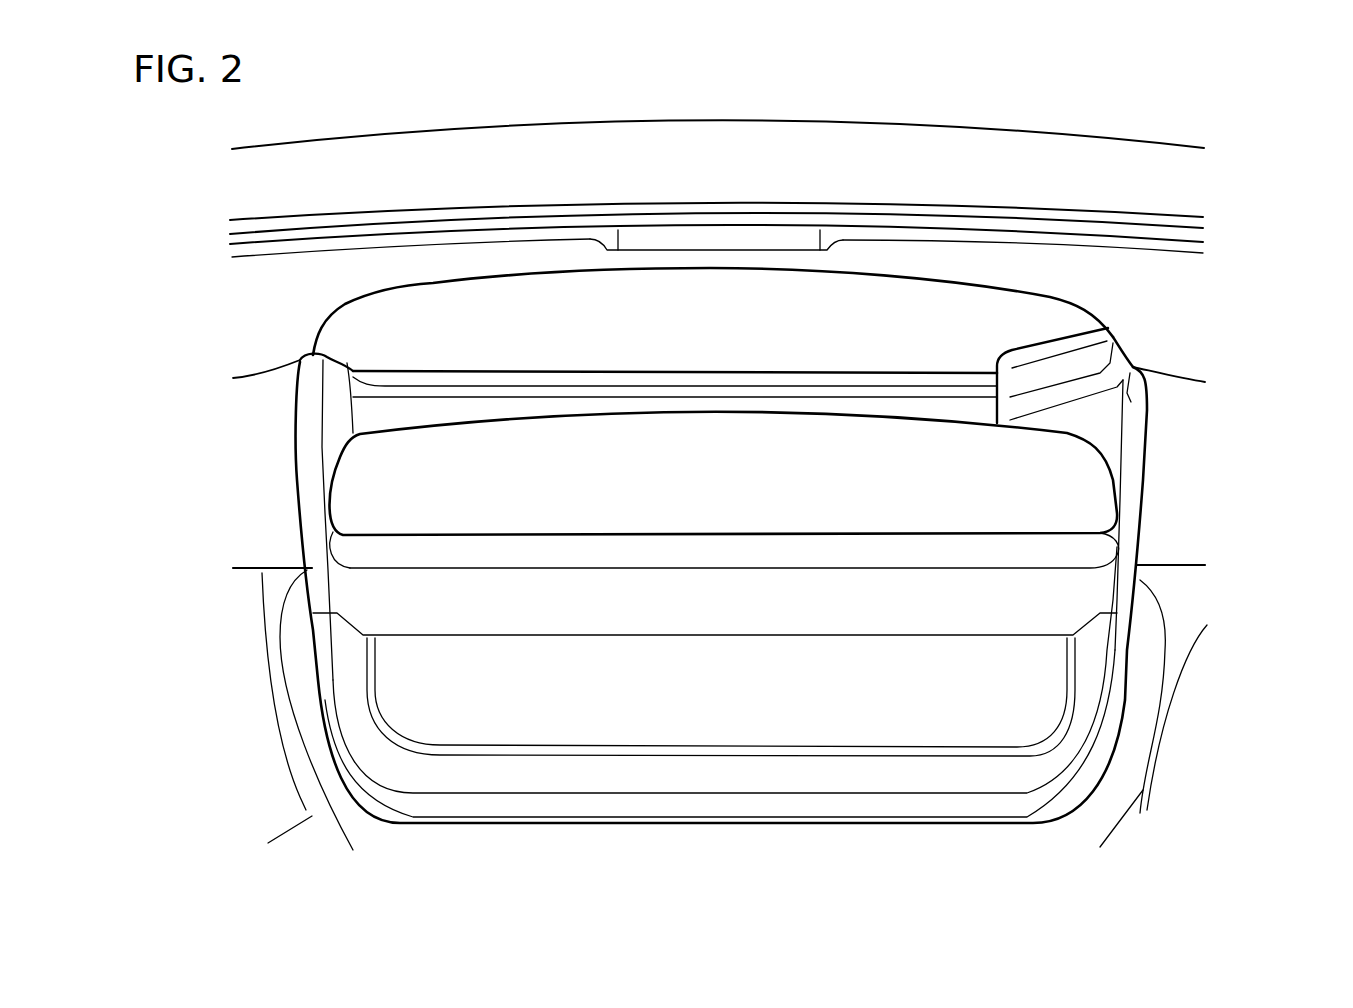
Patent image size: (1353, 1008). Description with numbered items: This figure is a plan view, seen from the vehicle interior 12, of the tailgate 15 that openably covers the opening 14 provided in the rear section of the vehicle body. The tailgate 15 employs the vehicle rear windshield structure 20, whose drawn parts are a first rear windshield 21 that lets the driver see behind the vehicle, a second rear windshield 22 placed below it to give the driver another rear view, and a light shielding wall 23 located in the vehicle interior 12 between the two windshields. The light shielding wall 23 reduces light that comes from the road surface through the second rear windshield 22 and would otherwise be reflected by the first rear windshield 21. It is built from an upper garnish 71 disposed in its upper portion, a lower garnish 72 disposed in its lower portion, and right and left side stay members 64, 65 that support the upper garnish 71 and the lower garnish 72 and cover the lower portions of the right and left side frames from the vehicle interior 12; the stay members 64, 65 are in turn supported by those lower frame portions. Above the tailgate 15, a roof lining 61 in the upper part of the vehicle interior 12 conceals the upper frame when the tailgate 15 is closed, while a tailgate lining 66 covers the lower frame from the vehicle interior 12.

The vehicle interior 12 is at (1087, 586).
The opening 14 is at (623, 823).
The tailgate 15 is at (373, 485).
The vehicle rear windshield structure 20 is at (855, 47).
The first rear windshield 21 is at (515, 303).
The second rear windshield 22 is at (658, 453).
The light shielding wall 23 is at (812, 83).
The roof lining 61 is at (938, 257).
The right side stay member 64 is at (1057, 333).
The left side stay member 65 is at (340, 377).
The tailgate lining 66 is at (1108, 680).
The upper garnish 71 is at (568, 370).
The lower garnish 72 is at (636, 403).